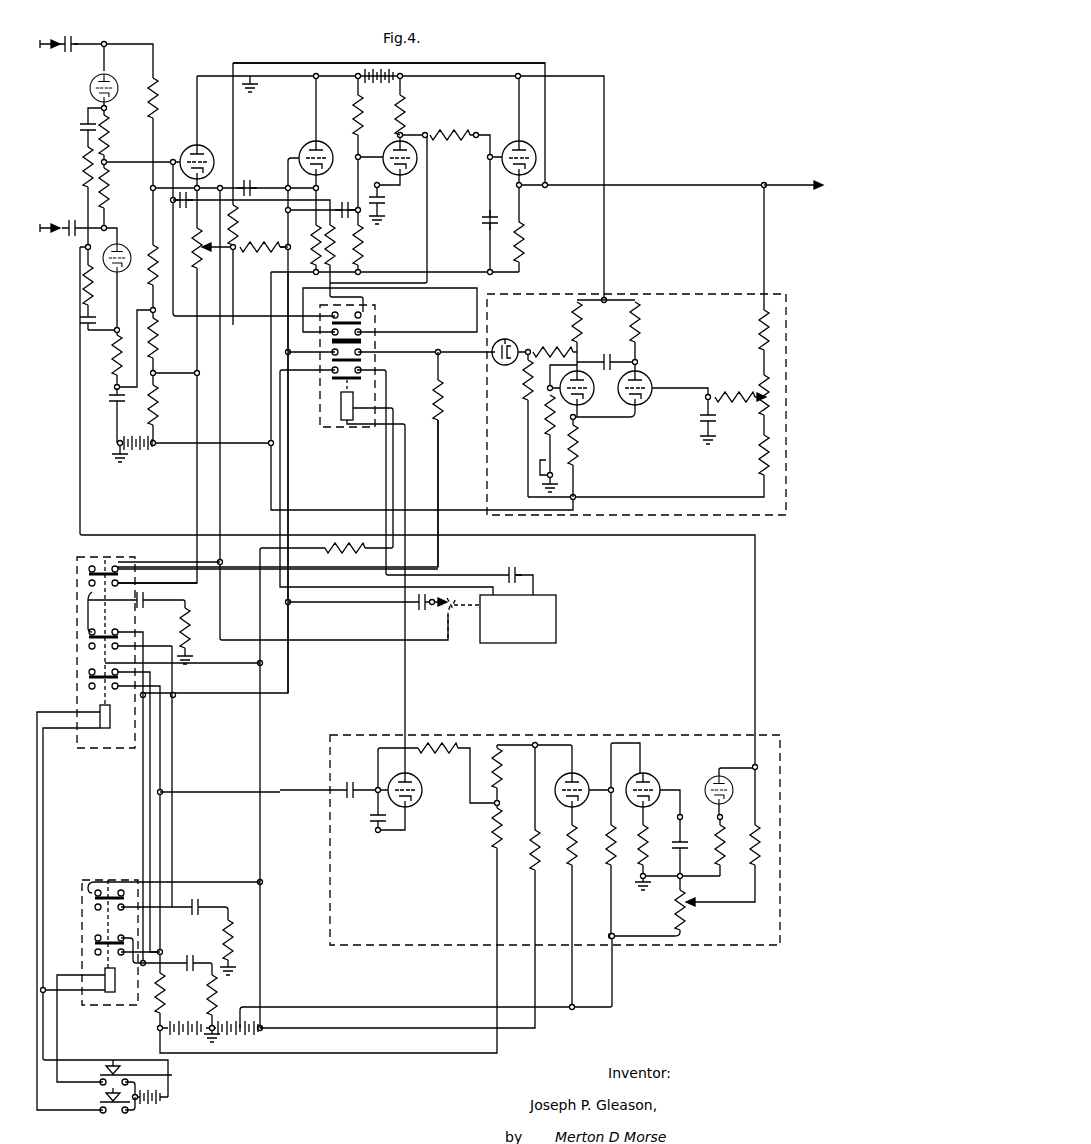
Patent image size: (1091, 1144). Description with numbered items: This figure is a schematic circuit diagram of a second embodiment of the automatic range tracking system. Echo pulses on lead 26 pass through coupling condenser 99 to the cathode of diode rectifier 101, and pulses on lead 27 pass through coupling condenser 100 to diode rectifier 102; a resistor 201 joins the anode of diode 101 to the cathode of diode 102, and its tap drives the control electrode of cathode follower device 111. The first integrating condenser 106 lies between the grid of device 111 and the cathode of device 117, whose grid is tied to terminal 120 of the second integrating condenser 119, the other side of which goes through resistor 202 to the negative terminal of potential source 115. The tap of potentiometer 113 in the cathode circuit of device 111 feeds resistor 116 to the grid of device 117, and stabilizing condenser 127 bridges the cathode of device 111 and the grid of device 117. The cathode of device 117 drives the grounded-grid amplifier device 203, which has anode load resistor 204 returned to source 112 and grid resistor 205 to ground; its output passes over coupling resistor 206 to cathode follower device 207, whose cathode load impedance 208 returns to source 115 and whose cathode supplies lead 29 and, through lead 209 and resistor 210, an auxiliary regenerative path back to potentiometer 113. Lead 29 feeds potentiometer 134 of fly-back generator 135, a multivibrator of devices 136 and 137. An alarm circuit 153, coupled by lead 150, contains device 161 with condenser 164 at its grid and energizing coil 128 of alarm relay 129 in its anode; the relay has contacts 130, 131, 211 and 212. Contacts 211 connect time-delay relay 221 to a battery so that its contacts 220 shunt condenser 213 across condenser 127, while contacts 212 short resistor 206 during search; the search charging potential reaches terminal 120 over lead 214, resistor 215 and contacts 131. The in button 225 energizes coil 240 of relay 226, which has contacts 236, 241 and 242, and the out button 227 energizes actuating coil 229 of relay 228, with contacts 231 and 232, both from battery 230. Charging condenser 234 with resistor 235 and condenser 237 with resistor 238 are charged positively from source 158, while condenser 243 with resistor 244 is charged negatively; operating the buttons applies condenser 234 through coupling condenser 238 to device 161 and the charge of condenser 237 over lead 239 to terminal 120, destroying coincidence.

The lead 26 is at (45, 53).
The lead 27 is at (45, 238).
The lead 29 is at (802, 183).
The coupling condenser 99 is at (72, 34).
The coupling condenser 100 is at (72, 222).
The diode rectifier 101 is at (90, 88).
The diode rectifier 102 is at (128, 246).
The first integrating condenser 106 is at (183, 210).
The electron discharge device 111 is at (190, 148).
The potential source 112 is at (382, 84).
The potentiometer 113 is at (203, 222).
The potential source 115 is at (138, 452).
The resistor 116 is at (262, 255).
The electron discharge device 117 is at (310, 143).
The second integrating condenser 119 is at (343, 202).
The terminal 120 is at (282, 230).
The stabilizing condenser 127 is at (247, 178).
The energizing coil 128 is at (336, 402).
The alarm relay 129 is at (398, 303).
The contacts 130 is at (362, 320).
The contacts 131 is at (362, 360).
The potentiometer 134 is at (758, 404).
The fly-back generator 135 is at (658, 289).
The electron discharge device 136 is at (652, 380).
The electron discharge device 137 is at (590, 400).
The lead 150 is at (82, 302).
The alarm circuit 153 is at (822, 818).
The potential source 158 is at (258, 1034).
The electron discharge device 161 is at (408, 805).
The condenser 164 is at (370, 818).
The resistor 201 is at (110, 187).
The resistor 202 is at (363, 240).
The electron discharge device 203 is at (400, 186).
The anode load resistor 204 is at (406, 100).
The grid resistor 205 is at (358, 108).
The coupling resistor 206 is at (455, 146).
The electron discharge device 207 is at (511, 141).
The cathode load impedance 208 is at (523, 242).
The lead 209 is at (520, 63).
The resistor 210 is at (238, 220).
The contacts 211 is at (362, 380).
The contacts 212 is at (362, 341).
The condenser 213 is at (424, 612).
The lead 214 is at (438, 480).
The resistor 215 is at (443, 398).
The contacts 220 is at (455, 590).
The time-delay relay 221 is at (556, 620).
The in button 225 is at (100, 1101).
The relay 226 is at (77, 616).
The out button 227 is at (122, 1068).
The relay 228 is at (82, 936).
The actuating coil 229 is at (79, 1025).
The battery 230 is at (162, 1100).
The contacts 231 is at (90, 942).
The contacts 232 is at (90, 896).
The charging condenser 234 is at (177, 984).
The resistor 235 is at (210, 1008).
The contacts 236 is at (90, 679).
The condenser 237 is at (195, 917).
The coupling condenser 238 is at (350, 778).
The lead 239 is at (180, 873).
The relay coil 240 is at (98, 728).
The contacts 241 is at (90, 639).
The contacts 242 is at (78, 576).
The condenser 243 is at (152, 597).
The resistor 244 is at (183, 612).